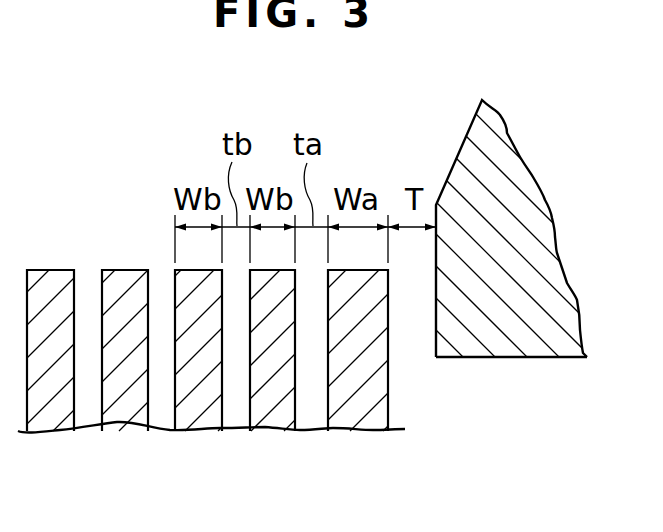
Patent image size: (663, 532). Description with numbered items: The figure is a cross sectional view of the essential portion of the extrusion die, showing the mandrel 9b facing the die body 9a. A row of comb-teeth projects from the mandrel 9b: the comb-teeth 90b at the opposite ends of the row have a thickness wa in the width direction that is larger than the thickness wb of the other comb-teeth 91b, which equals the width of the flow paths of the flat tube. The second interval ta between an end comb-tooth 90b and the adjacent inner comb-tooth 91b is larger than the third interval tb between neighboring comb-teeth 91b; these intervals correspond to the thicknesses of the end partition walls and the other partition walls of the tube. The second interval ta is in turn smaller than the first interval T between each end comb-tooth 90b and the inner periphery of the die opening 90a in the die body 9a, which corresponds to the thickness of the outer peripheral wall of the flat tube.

The die body 9a is at (518, 222).
The mandrel 9b is at (160, 433).
The die opening 90a is at (436, 335).
The comb-teeth at the opposite ends 90b is at (385, 420).
The other comb-teeth 91b is at (272, 423).